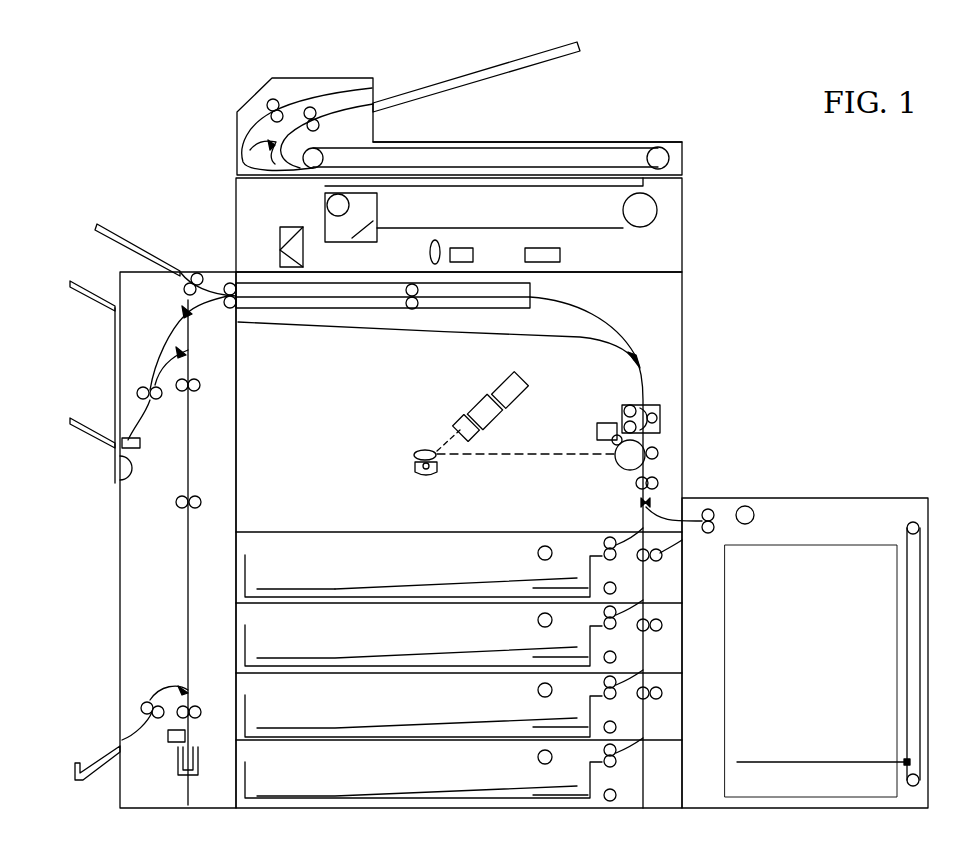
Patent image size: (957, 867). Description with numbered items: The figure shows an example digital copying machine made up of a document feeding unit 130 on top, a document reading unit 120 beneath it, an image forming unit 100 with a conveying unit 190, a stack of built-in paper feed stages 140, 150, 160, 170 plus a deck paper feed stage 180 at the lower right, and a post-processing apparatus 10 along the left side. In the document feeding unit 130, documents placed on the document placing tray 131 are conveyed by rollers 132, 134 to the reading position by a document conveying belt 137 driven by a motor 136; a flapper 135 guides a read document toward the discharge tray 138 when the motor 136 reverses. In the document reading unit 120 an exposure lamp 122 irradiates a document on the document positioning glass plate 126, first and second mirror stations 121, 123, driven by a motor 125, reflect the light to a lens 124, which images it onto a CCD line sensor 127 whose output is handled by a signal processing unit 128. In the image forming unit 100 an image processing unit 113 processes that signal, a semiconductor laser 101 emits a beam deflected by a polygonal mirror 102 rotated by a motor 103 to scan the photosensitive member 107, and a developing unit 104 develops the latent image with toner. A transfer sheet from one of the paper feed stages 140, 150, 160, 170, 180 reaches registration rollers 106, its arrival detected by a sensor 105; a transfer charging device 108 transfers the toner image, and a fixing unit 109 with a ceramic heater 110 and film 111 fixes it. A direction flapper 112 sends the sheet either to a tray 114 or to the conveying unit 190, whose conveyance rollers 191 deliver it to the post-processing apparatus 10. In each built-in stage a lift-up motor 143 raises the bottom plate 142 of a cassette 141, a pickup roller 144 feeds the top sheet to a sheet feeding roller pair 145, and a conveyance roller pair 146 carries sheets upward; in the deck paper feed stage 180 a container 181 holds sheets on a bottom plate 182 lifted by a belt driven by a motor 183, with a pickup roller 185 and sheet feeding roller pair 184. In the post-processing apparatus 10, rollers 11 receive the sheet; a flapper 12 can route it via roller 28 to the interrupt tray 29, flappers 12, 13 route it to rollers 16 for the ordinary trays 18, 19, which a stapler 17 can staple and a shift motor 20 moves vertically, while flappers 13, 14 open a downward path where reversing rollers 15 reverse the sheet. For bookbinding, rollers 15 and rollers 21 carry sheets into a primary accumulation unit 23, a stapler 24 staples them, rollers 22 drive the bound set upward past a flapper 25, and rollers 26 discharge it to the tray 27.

The post-processing apparatus 10 is at (120, 527).
The rollers 11 is at (226, 280).
The flapper 12 is at (186, 292).
The flapper 13 is at (178, 312).
The flapper 14 is at (188, 350).
The rollers 15 is at (200, 378).
The rollers 16 is at (162, 398).
The stapler 17 is at (142, 444).
The tray 18 is at (98, 292).
The tray 19 is at (93, 420).
The shift motor 20 is at (130, 478).
The rollers 21 is at (200, 497).
The rollers 22 is at (200, 705).
The primary accumulation unit 23 is at (200, 776).
The stapler 24 is at (168, 742).
The flapper 25 is at (180, 682).
The rollers 26 is at (146, 702).
The tray 27 is at (93, 762).
The roller 28 is at (194, 273).
The tray 29 is at (138, 252).
The image forming unit 100 is at (684, 316).
The semiconductor laser 101 is at (465, 415).
The polygonal mirror 102 is at (414, 453).
The motor 103 is at (418, 478).
The developing unit 104 is at (595, 430).
The sensor 105 is at (638, 503).
The registration rollers 106 is at (660, 480).
The photosensitive member 107 is at (617, 460).
The transfer charging device 108 is at (660, 450).
The fixing unit 109 is at (662, 412).
The ceramic heater 110 is at (624, 422).
The film 111 is at (624, 406).
The direction flapper 112 is at (642, 358).
The image processing unit 113 is at (498, 386).
The tray 114 is at (370, 328).
The document reading unit 120 is at (684, 232).
The first mirror station 121 is at (322, 220).
The exposure lamp 122 is at (328, 200).
The second mirror station 123 is at (292, 250).
The lens 124 is at (430, 252).
The motor 125 is at (645, 223).
The document positioning glass plate 126 is at (578, 196).
The CCD line sensor 127 is at (475, 252).
The signal processing unit 128 is at (562, 255).
The document feeding unit 130 is at (684, 160).
The document placing tray 131 is at (425, 80).
The roller 132 is at (276, 98).
The roller 134 is at (318, 112).
The flapper 135 is at (246, 150).
The motor 136 is at (658, 147).
The document conveying belt 137 is at (532, 142).
The discharge tray 138 is at (418, 140).
The built-in paper feed stage 140 is at (459, 567).
The cassette 141 is at (250, 576).
The bottom plate 142 is at (350, 584).
The lift-up motor 143 is at (616, 583).
The pickup roller 144 is at (538, 552).
The sheet feeding roller pair 145 is at (604, 546).
The conveyance roller pair 146 is at (664, 552).
The built-in paper feed stage 150 is at (459, 636).
The built-in paper feed stage 160 is at (459, 705).
The built-in paper feed stage 170 is at (444, 769).
The deck paper feed stage 180 is at (838, 498).
The container 181 is at (727, 600).
The bottom plate 182 is at (776, 762).
The motor 183 is at (906, 524).
The sheet feeding roller pair 184 is at (714, 510).
The pickup roller 185 is at (756, 516).
The conveying unit 190 is at (495, 309).
The conveyance rollers 191 is at (412, 310).